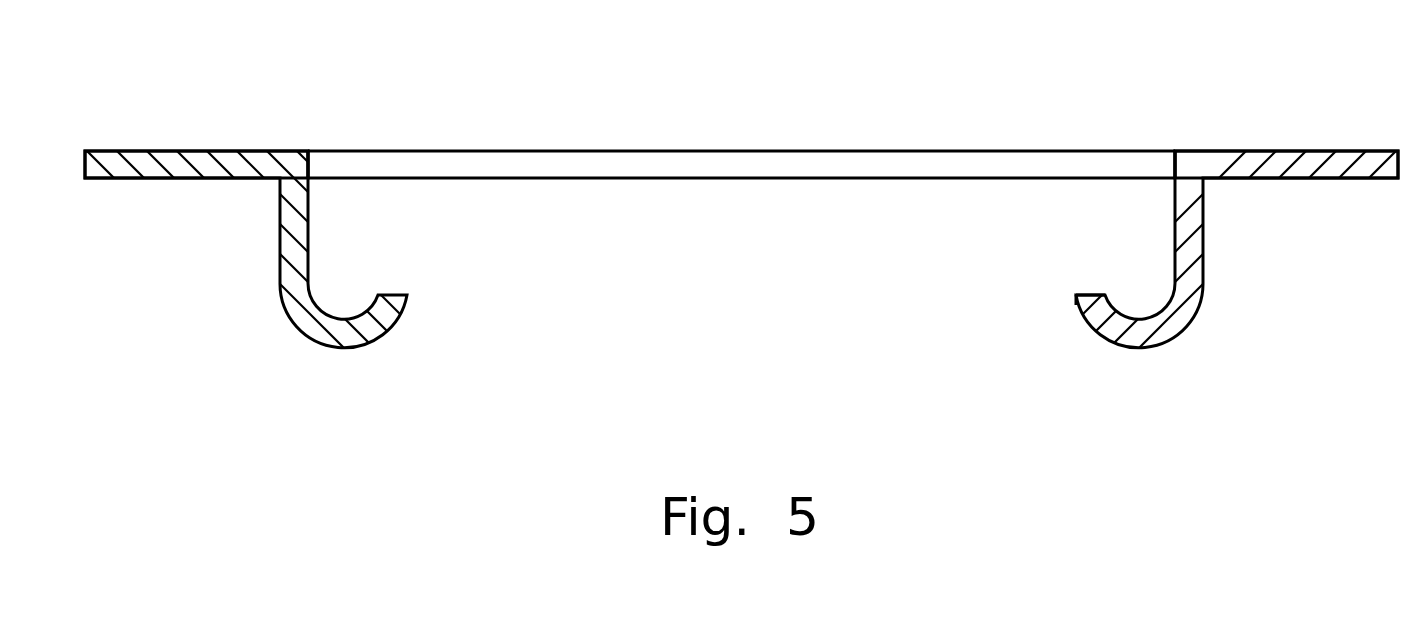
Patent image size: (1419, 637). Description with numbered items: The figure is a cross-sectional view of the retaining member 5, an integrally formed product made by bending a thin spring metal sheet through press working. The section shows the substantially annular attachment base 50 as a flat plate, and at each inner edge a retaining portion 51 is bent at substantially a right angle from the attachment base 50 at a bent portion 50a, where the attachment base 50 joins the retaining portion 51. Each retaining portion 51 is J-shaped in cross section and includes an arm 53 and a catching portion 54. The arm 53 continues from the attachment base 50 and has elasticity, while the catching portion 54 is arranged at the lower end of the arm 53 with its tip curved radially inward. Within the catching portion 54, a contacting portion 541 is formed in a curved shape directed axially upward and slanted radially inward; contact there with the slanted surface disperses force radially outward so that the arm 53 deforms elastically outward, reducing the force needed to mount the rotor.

The retaining member 5 is at (717, 252).
The attachment base 50 is at (140, 151).
The bent portion 50a is at (309, 151).
The retaining portion 51 is at (1168, 295).
The arm 53 is at (1203, 247).
The catching portion 54 is at (1130, 343).
The contacting portion 541 is at (1072, 318).